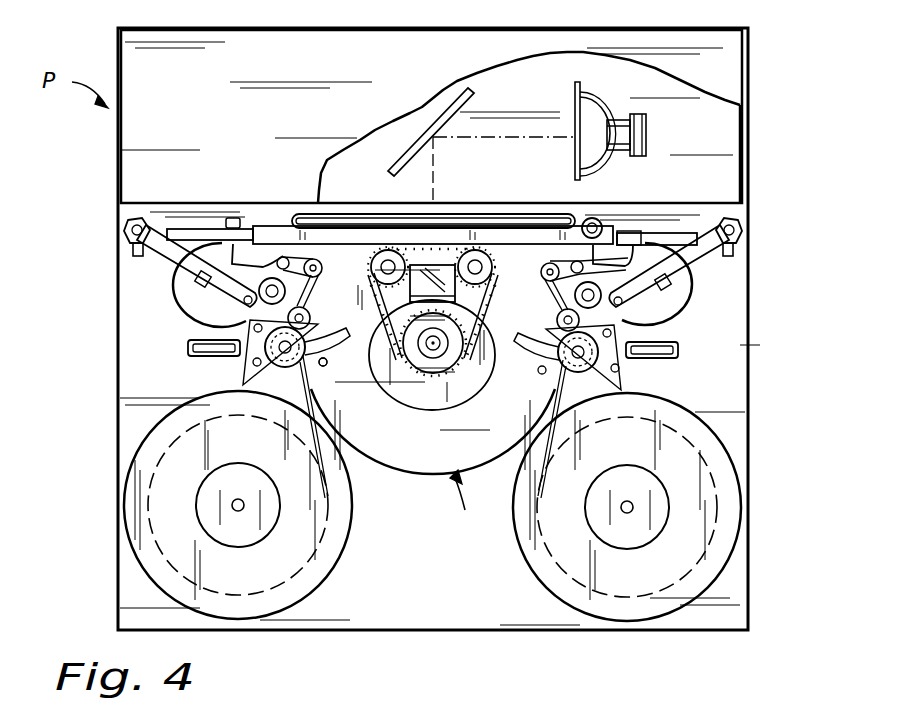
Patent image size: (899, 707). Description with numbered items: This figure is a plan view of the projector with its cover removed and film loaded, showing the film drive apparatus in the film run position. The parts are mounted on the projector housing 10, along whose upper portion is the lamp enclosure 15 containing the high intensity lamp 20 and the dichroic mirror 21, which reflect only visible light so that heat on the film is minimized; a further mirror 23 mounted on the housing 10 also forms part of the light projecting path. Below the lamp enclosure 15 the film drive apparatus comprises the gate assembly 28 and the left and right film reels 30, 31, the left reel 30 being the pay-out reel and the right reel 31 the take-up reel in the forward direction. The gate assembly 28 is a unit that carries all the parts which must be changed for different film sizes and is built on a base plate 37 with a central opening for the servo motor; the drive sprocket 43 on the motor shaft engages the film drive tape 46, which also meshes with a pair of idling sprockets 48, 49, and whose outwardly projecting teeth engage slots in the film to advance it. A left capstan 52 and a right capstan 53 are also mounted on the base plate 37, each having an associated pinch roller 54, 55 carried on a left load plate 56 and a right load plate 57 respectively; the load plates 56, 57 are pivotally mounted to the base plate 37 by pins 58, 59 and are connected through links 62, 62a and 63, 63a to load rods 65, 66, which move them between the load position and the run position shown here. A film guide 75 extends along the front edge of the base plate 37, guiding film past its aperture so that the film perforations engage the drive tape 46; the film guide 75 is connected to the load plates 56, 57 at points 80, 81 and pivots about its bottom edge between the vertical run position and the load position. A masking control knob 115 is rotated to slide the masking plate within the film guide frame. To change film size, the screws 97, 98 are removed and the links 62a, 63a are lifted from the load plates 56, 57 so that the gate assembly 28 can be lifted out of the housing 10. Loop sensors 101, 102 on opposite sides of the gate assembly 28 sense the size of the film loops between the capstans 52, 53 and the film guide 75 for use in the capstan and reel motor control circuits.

The housing 10 is at (752, 405).
The lamp enclosure 15 is at (722, 120).
The high intensity lamp 20 is at (573, 108).
The mirror 21 is at (448, 110).
The mirror 23 is at (448, 265).
The gate assembly 28 is at (457, 506).
The left film reel 30 is at (240, 540).
The right film reel 31 is at (622, 542).
The base plate 37 is at (408, 470).
The drive sprocket 43 is at (447, 382).
The film drive tape 46 is at (327, 364).
The idling sprocket 48 is at (380, 249).
The idling sprocket 49 is at (483, 250).
The left capstan 52 is at (310, 318).
The right capstan 53 is at (557, 320).
The pinch roller 54 is at (270, 370).
The pinch roller 55 is at (580, 375).
The left load plate 56 is at (258, 352).
The right load plate 57 is at (672, 340).
The pin 58 is at (321, 268).
The pin 59 is at (542, 274).
The link 62 is at (157, 256).
The link 62a is at (188, 313).
The link 63 is at (712, 270).
The link 63a is at (662, 318).
The load rod 65 is at (128, 227).
The load rod 66 is at (744, 233).
The film guide 75 is at (275, 229).
The connection point 80 is at (234, 218).
The connection point 81 is at (632, 233).
The screw 97 is at (323, 367).
The screw 98 is at (542, 375).
The loop sensor 101 is at (188, 350).
The loop sensor 102 is at (655, 358).
The masking control knob 115 is at (598, 218).